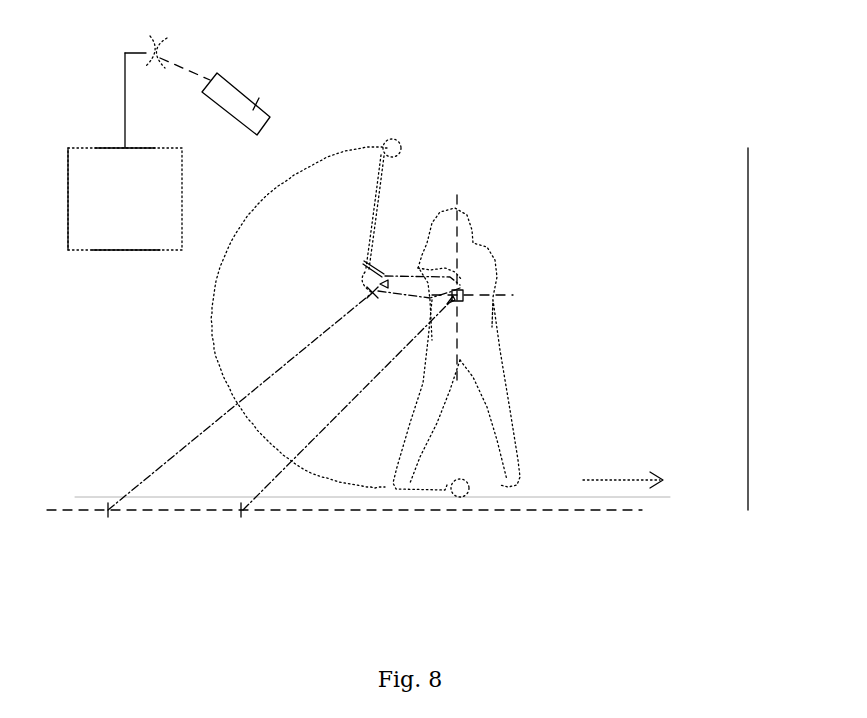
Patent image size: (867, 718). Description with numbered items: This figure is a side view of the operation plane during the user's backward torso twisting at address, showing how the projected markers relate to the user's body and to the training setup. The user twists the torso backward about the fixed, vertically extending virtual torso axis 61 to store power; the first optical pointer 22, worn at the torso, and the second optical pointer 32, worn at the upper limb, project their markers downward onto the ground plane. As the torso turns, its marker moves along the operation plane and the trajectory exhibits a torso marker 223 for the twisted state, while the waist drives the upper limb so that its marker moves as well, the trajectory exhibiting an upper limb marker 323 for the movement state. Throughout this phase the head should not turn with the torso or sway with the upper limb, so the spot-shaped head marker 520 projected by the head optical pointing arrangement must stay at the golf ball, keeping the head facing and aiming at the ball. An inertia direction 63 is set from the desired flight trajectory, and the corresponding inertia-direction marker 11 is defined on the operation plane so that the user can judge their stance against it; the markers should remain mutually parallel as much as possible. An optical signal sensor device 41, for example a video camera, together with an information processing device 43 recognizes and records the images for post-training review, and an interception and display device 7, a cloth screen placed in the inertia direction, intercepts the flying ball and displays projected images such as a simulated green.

The interception and display device 7 is at (747, 451).
The inertia-direction marker 11 is at (445, 499).
The first optical pointer 22 is at (460, 305).
The second optical pointer 32 is at (373, 300).
The optical signal sensor device 41 is at (264, 97).
The information processing device 43 is at (130, 237).
The torso axis 61 is at (457, 195).
The inertia direction 63 is at (627, 479).
The torso marker 223 is at (341, 420).
The upper limb marker 323 is at (235, 416).
The head marker 520 is at (462, 497).